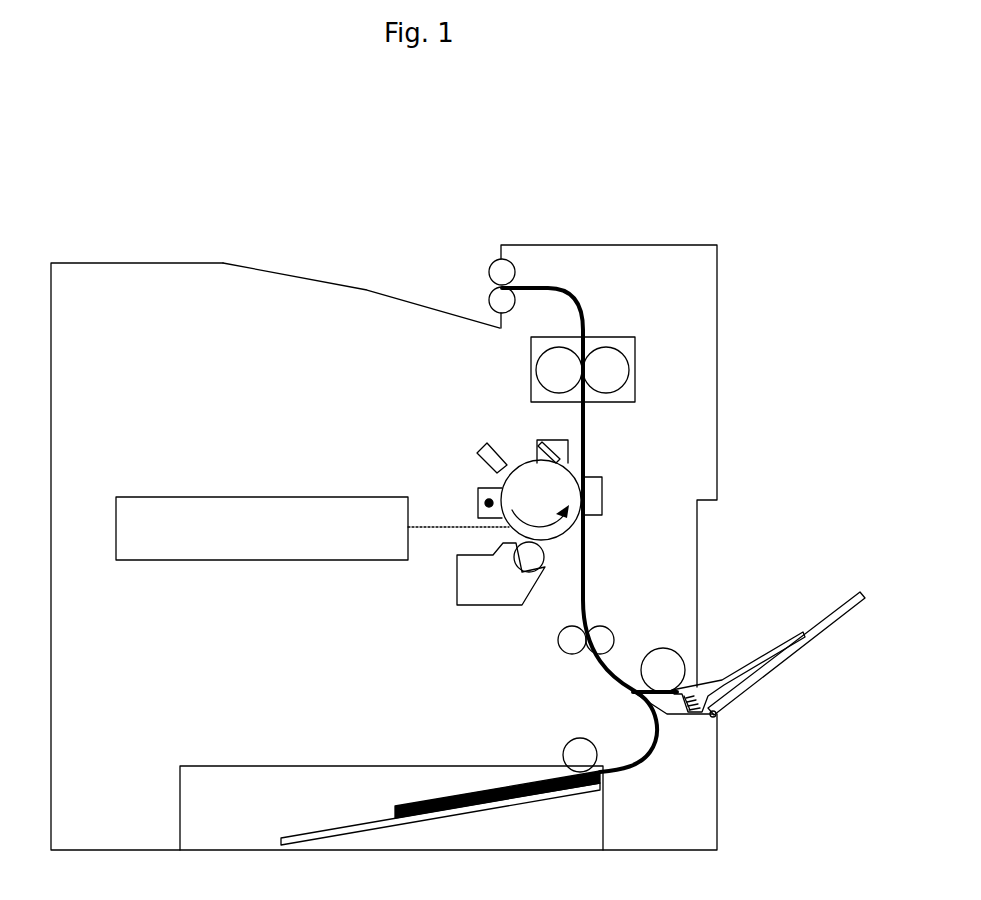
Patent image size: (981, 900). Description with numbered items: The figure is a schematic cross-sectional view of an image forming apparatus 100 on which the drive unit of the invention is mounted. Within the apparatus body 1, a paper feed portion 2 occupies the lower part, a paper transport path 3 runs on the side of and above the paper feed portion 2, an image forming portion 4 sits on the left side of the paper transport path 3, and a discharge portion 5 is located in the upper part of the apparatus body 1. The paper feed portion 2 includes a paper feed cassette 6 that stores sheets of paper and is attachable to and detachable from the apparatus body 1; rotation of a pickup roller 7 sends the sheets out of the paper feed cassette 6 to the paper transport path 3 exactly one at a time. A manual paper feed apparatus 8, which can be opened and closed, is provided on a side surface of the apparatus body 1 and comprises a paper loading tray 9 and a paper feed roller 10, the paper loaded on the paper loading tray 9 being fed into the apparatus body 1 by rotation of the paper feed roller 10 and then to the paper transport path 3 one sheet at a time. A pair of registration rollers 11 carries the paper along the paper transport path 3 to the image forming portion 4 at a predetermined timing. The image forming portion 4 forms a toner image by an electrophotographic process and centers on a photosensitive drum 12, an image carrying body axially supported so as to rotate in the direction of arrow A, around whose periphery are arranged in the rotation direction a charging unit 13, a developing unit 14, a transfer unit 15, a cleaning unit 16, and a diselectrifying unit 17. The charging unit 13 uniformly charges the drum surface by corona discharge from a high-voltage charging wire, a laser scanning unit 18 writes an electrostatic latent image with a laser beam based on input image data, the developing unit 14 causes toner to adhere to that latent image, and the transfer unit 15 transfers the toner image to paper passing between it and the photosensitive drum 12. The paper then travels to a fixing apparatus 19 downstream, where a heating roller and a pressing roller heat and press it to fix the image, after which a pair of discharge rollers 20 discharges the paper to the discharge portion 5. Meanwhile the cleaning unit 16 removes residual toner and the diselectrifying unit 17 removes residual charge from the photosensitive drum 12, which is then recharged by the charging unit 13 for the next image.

The image forming apparatus 100 is at (757, 328).
The apparatus body 1 is at (632, 240).
The paper feed portion 2 is at (680, 752).
The paper transport path 3 is at (587, 593).
The image forming portion 4 is at (514, 444).
The discharge portion 5 is at (410, 300).
The paper feed cassette 6 is at (195, 797).
The pickup roller 7 is at (577, 753).
The manual paper feed apparatus 8 is at (760, 616).
The paper loading tray 9 is at (820, 633).
The paper feed roller 10 is at (667, 660).
The pair of registration rollers 11 is at (570, 642).
The photosensitive drum 12 is at (553, 488).
The charging unit 13 is at (483, 492).
The developing unit 14 is at (485, 583).
The transfer unit 15 is at (593, 508).
The cleaning unit 16 is at (543, 433).
The diselectrifying unit 17 is at (492, 460).
The laser scanning unit 18 is at (205, 527).
The fixing apparatus 19 is at (631, 357).
The pair of discharge rollers 20 is at (500, 270).